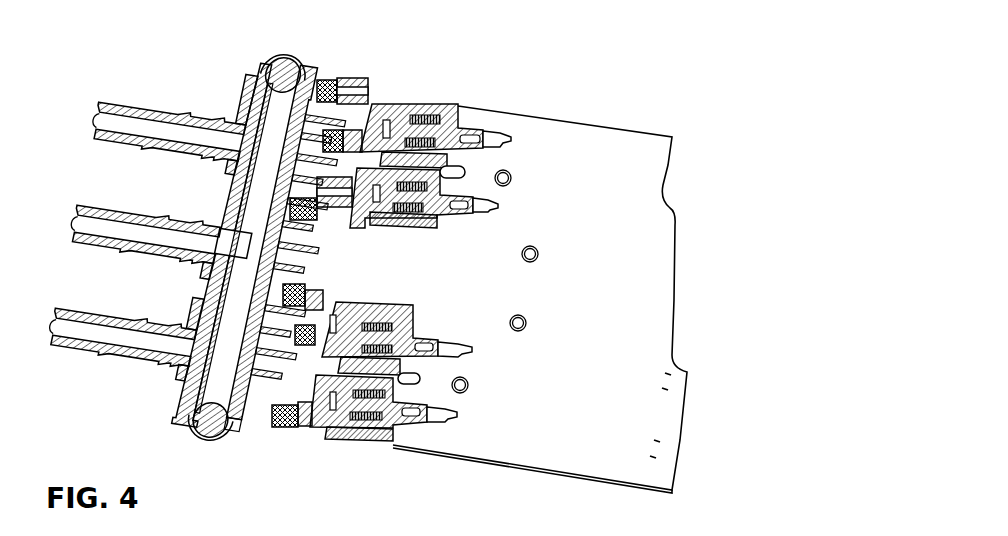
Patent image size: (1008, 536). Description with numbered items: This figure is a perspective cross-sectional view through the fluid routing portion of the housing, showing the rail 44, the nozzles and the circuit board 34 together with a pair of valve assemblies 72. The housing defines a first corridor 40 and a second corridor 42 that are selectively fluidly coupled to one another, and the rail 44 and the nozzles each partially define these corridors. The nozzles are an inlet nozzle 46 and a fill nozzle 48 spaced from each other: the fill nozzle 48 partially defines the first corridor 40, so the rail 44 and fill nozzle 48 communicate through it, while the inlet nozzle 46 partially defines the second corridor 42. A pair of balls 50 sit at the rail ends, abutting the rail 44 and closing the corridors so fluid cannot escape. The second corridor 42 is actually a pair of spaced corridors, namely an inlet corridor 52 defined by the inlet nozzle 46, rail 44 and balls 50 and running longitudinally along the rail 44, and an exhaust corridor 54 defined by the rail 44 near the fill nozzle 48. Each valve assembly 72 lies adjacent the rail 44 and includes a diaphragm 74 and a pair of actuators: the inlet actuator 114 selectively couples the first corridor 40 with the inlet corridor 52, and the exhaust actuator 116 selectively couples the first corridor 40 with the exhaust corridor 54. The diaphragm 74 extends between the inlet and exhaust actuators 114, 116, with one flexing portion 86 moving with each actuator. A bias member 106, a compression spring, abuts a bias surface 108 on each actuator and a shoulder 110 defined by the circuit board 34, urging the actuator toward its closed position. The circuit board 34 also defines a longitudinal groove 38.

The circuit board 34 is at (637, 155).
The groove 38 is at (500, 138).
The first corridor 40 is at (100, 118).
The second corridor 42 is at (252, 208).
The rail 44 is at (245, 100).
The inlet nozzle 46 is at (90, 205).
The fill nozzle 48 is at (120, 103).
The balls 50 is at (274, 60).
The inlet corridor 52 is at (200, 318).
The exhaust corridor 54 is at (300, 90).
The valve assembly 72 is at (378, 92).
The diaphragm 74 is at (342, 200).
The flexing portion 86 is at (332, 305).
The bias member 106 is at (445, 110).
The bias surface 108 is at (440, 180).
The shoulder 110 is at (478, 172).
The inlet actuator 114 is at (395, 226).
The exhaust actuator 116 is at (400, 112).